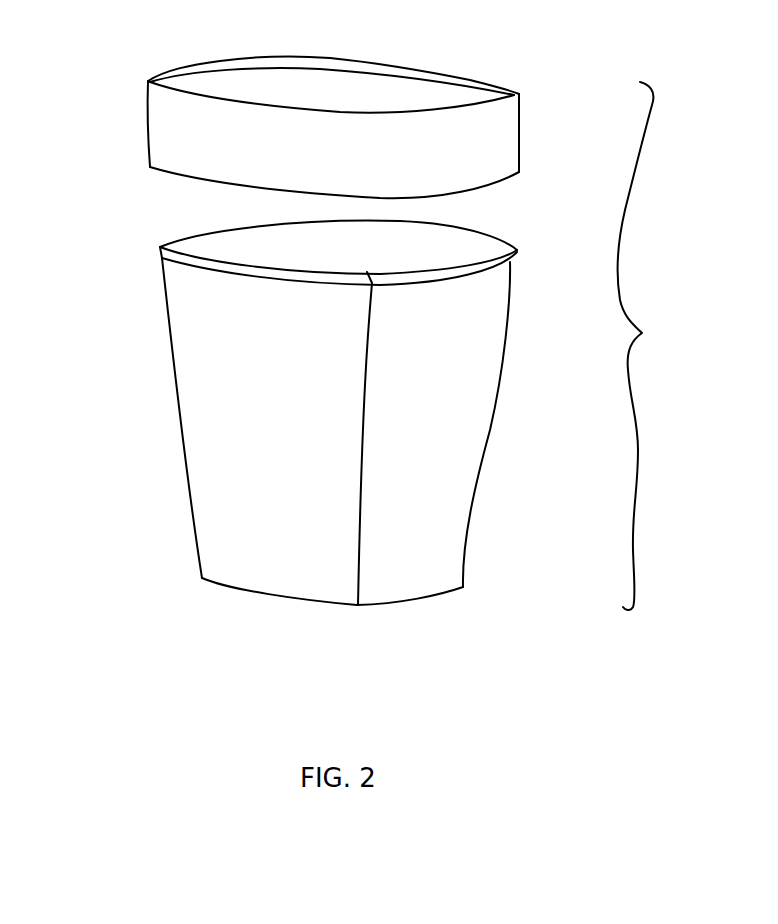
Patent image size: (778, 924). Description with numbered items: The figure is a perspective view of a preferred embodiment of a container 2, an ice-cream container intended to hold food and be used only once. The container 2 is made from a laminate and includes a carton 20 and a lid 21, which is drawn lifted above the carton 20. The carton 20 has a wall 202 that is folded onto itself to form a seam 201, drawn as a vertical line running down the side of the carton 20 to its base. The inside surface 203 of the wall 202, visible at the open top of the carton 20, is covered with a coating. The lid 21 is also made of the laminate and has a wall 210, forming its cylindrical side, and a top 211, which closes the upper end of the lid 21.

The container 2 is at (647, 346).
The carton 20 is at (306, 434).
The lid 21 is at (321, 116).
The seam 201 is at (360, 575).
The wall 202 is at (467, 403).
The inside surface 203 is at (456, 242).
The wall 210 is at (523, 133).
The top 211 is at (413, 98).